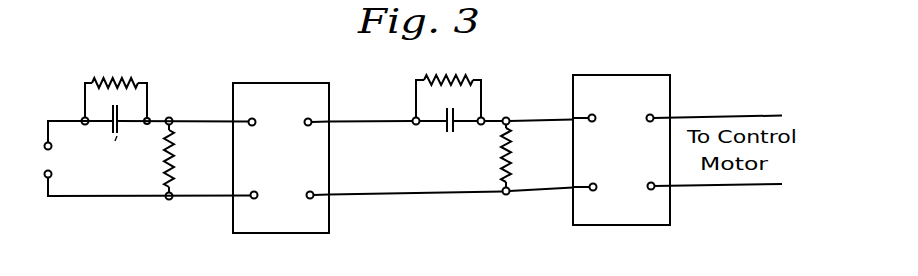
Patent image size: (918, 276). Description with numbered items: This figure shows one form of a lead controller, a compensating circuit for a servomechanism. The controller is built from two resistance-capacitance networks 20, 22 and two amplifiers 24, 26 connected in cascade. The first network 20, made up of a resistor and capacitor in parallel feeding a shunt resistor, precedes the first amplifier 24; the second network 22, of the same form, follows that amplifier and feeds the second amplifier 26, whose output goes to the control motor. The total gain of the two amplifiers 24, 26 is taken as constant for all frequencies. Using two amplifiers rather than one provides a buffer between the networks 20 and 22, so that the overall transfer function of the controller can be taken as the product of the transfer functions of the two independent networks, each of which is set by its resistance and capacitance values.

The resistance-capacitance network 20 is at (130, 142).
The resistance-capacitance network 22 is at (478, 135).
The amplifier 24 is at (275, 222).
The amplifier 26 is at (650, 100).